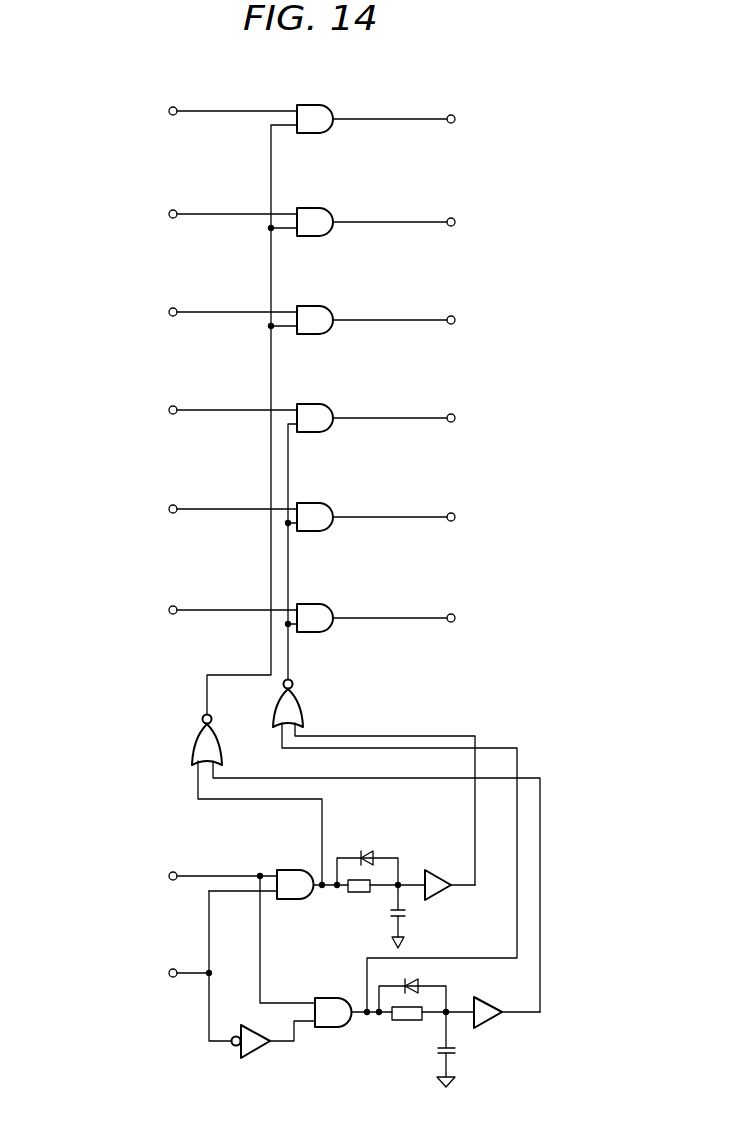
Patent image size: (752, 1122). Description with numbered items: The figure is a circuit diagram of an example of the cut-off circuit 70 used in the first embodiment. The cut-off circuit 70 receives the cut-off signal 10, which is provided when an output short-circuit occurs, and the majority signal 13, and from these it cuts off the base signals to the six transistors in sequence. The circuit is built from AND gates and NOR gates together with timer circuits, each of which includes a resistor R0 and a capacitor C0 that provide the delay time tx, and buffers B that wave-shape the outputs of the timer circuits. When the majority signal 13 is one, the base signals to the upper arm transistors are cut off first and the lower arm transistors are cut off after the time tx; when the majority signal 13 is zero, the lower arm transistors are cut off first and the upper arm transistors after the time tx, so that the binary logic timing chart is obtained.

The cut-off circuit 70 is at (289, 79).
The cut-off signal 10 is at (173, 871).
The majority signal 13 is at (173, 968).
The buffer B is at (436, 871).
The resistor R0 is at (356, 893).
The capacitor C0 is at (410, 912).